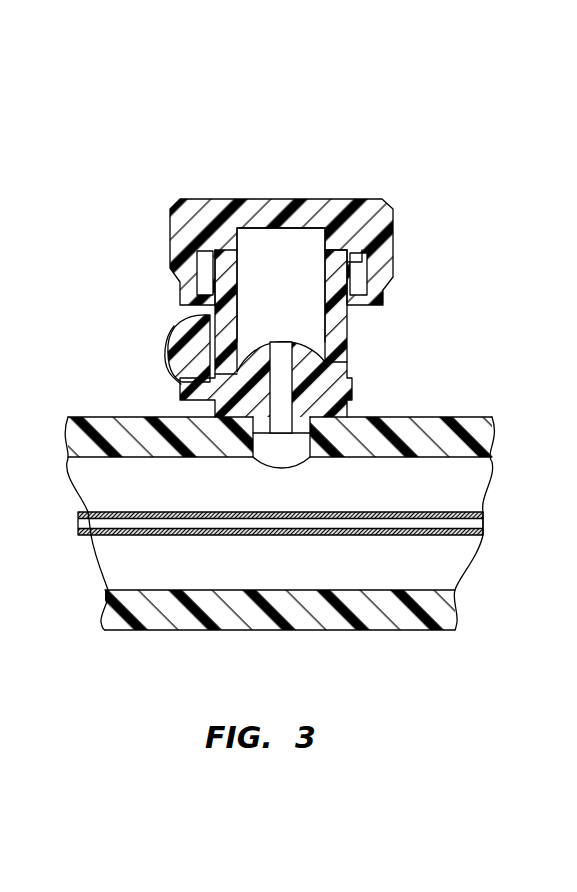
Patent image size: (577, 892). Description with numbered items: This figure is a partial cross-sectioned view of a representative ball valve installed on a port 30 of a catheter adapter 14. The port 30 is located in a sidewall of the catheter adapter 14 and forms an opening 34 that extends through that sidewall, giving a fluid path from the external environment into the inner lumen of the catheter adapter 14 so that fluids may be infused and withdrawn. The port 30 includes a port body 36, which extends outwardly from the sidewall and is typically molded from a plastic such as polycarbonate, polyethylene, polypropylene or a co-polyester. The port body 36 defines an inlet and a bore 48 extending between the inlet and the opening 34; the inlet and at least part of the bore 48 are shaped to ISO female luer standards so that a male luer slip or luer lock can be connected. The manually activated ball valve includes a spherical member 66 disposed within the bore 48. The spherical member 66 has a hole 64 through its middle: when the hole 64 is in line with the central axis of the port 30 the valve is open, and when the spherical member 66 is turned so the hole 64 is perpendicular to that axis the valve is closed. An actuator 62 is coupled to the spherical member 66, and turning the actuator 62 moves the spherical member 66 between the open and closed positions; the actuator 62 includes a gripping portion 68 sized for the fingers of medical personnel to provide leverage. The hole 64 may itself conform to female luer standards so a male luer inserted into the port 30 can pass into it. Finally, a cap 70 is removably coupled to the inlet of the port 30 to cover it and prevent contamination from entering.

The port 30 is at (135, 205).
The catheter adapter 14 is at (474, 418).
The opening 34 is at (253, 460).
The port body 36 is at (332, 253).
The bore 48 is at (292, 282).
The actuator 62 is at (178, 320).
The hole 64 is at (284, 348).
The spherical member 66 is at (313, 368).
The gripping portion 68 is at (160, 355).
The cap 70 is at (392, 215).